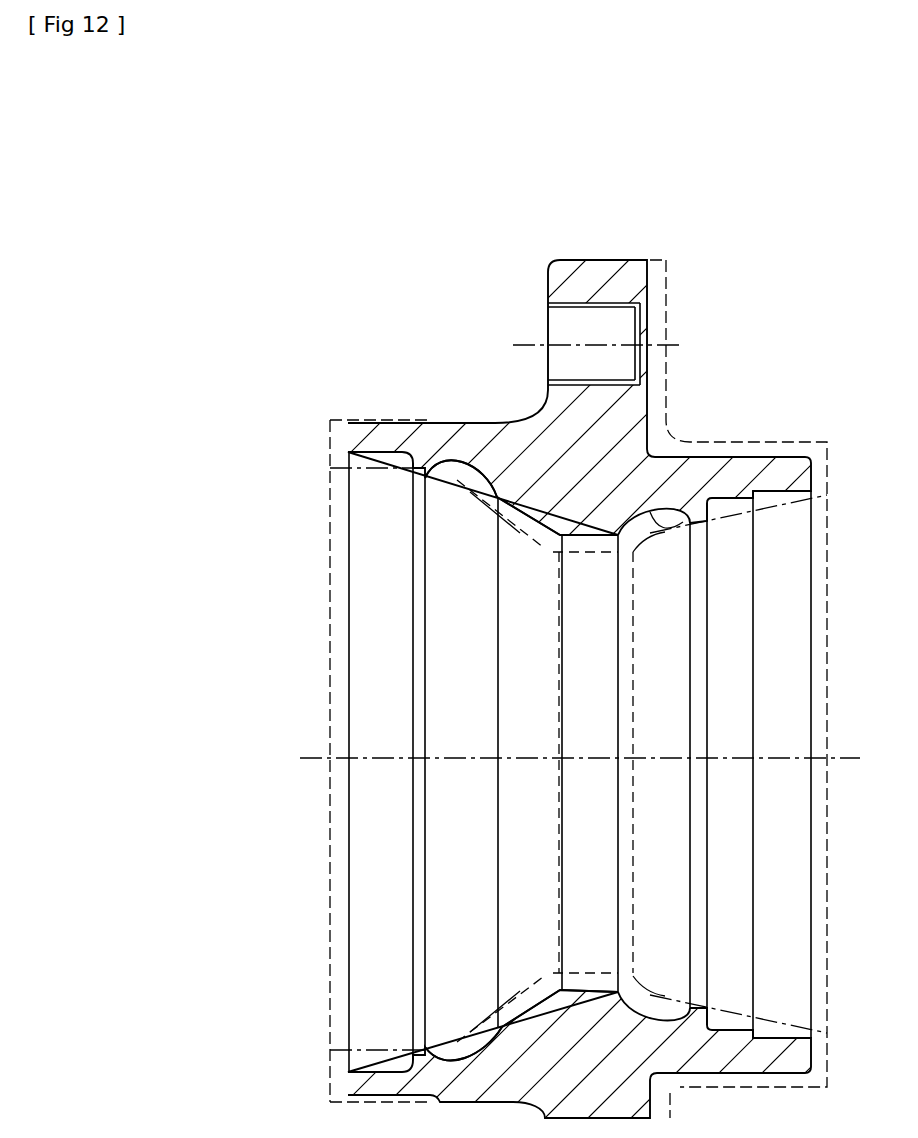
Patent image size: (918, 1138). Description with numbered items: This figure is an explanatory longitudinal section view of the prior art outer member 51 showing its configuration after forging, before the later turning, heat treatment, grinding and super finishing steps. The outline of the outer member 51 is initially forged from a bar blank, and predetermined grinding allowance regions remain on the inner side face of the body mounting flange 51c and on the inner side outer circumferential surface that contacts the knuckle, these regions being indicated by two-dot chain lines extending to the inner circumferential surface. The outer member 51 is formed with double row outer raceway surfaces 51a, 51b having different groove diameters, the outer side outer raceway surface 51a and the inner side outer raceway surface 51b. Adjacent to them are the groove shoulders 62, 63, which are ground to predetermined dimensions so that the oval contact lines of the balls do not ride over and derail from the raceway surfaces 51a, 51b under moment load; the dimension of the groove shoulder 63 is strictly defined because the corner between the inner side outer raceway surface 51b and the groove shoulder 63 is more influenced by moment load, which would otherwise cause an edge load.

The outer member 51 is at (528, 428).
The outer side outer raceway surface 51a is at (449, 478).
The inner side outer raceway surface 51b is at (667, 533).
The body mounting flange 51c is at (583, 282).
The groove shoulder 62 is at (530, 516).
The groove shoulder 63 is at (590, 538).